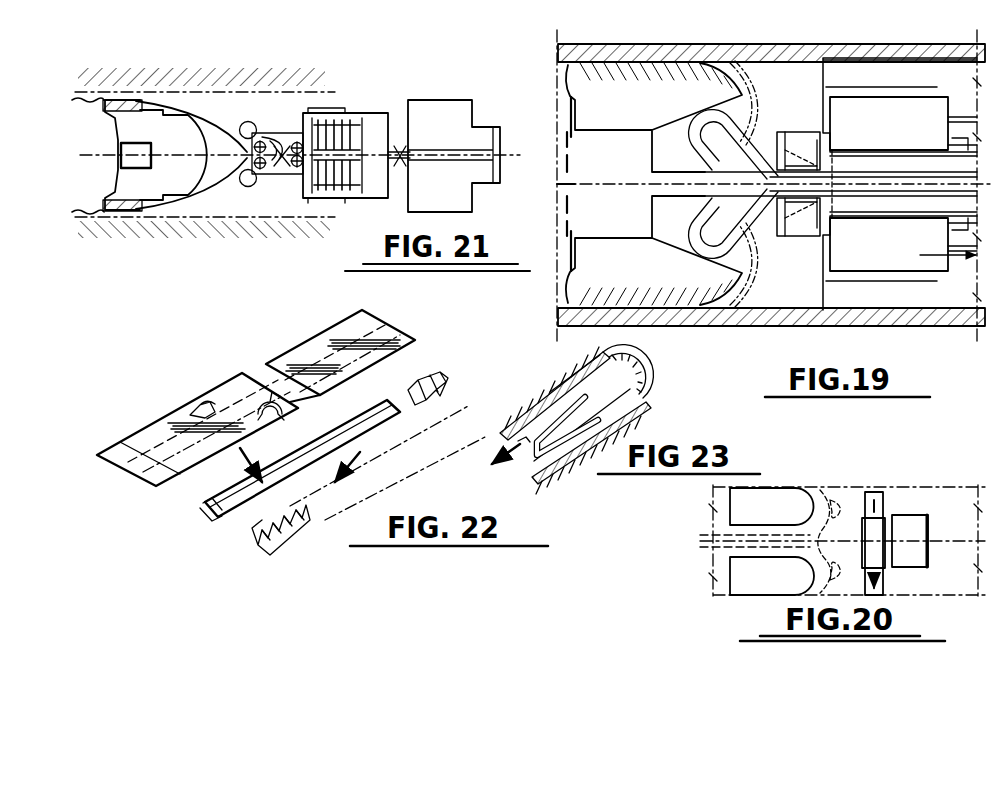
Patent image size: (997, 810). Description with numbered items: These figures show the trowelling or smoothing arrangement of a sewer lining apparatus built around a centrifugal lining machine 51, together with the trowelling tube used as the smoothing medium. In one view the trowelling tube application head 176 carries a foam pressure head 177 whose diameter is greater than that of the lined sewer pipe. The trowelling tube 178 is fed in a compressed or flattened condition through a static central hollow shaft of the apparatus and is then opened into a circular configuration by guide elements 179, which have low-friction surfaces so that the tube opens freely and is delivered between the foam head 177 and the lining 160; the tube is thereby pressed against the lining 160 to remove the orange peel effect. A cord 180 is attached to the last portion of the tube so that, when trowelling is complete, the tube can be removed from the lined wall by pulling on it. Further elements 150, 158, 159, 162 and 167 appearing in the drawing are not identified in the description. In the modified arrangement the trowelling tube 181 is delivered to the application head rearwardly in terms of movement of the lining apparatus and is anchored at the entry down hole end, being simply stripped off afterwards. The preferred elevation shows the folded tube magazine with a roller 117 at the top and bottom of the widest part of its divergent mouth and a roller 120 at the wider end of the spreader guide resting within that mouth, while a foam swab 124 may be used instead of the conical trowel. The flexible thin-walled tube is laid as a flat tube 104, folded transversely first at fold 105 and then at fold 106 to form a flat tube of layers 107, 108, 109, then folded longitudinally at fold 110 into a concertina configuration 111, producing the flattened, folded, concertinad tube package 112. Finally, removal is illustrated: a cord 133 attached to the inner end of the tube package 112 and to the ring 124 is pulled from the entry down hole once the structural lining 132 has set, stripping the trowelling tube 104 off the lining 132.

In FIG. 21, the centrifugal lining machine 51 is at (449, 120).
In FIG. 21, the trowelling tube 104 is at (296, 166).
In FIG. 22, the trowelling tube 104 is at (356, 332).
In FIG. 23, the trowelling tube 104 is at (618, 392).
In FIG. 22, the first transverse fold 105 is at (197, 407).
In FIG. 22, the second transverse fold 106 is at (270, 400).
In FIG. 22, the layer 107 is at (210, 524).
In FIG. 22, the layer 108 is at (205, 516).
In FIG. 22, the layer 109 is at (203, 503).
In FIG. 22, the longitudinal fold 110 is at (436, 376).
In FIG. 22, the concertina configuration 111 is at (306, 536).
In FIG. 21, the tube package 112 is at (360, 122).
In FIG. 21, the roller 117 is at (246, 123).
In FIG. 21, the roller 120 is at (262, 140).
In FIG. 21, the foam swab 124 is at (120, 106).
In FIG. 23, the structural lining 132 is at (666, 374).
In FIG. 23, the cord 133 is at (517, 444).
In FIG. 19, the housing 150 is at (872, 327).
In FIG. 19, the bearing housing 158 is at (890, 85).
In FIG. 19, the bearing 159 is at (793, 125).
In FIG. 19, the lining 160 is at (663, 70).
In FIG. 19, the shaft 162 is at (860, 166).
In FIG. 19, the bearing ring 167 is at (820, 150).
In FIG. 19, the trowelling tube application head 176 is at (572, 102).
In FIG. 19, the foam pressure head 177 is at (636, 90).
In FIG. 19, the trowelling tube 178 is at (740, 78).
In FIG. 19, the guide elements 179 is at (712, 138).
In FIG. 19, the cord 180 is at (568, 194).
In FIG. 20, the trowelling tube 181 is at (727, 547).